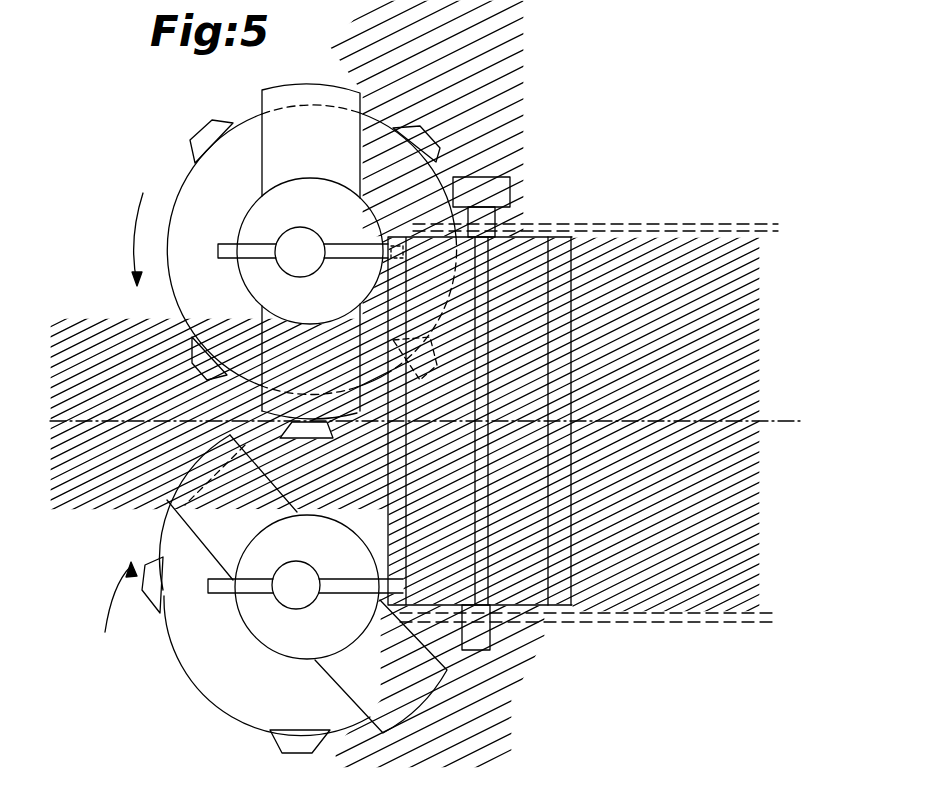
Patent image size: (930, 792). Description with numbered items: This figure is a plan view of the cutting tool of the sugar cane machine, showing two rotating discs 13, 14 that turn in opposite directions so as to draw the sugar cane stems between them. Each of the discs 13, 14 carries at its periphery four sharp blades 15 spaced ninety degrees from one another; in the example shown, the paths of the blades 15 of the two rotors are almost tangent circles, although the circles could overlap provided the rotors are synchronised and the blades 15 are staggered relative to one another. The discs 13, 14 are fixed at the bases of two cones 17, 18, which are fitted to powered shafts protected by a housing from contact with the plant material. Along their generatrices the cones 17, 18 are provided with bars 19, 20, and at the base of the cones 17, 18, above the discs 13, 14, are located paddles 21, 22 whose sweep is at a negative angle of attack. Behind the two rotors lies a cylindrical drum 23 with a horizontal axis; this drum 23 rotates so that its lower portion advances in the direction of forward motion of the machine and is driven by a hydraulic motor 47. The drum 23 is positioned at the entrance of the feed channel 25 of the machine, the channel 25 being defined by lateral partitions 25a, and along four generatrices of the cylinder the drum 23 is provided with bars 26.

The rotating disc 13 is at (230, 677).
The rotating disc 14 is at (247, 128).
The sharp blades 15 is at (204, 134).
The cone 17 is at (250, 617).
The cone 18 is at (257, 222).
The bar 19 is at (233, 575).
The bar 20 is at (347, 256).
The paddle 21 is at (197, 520).
The paddle 22 is at (288, 92).
The cylindrical drum 23 is at (528, 572).
The feed channel 25 is at (640, 602).
The lateral partitions 25a is at (688, 228).
The bars 26 is at (557, 262).
The hydraulic motor 47 is at (512, 198).